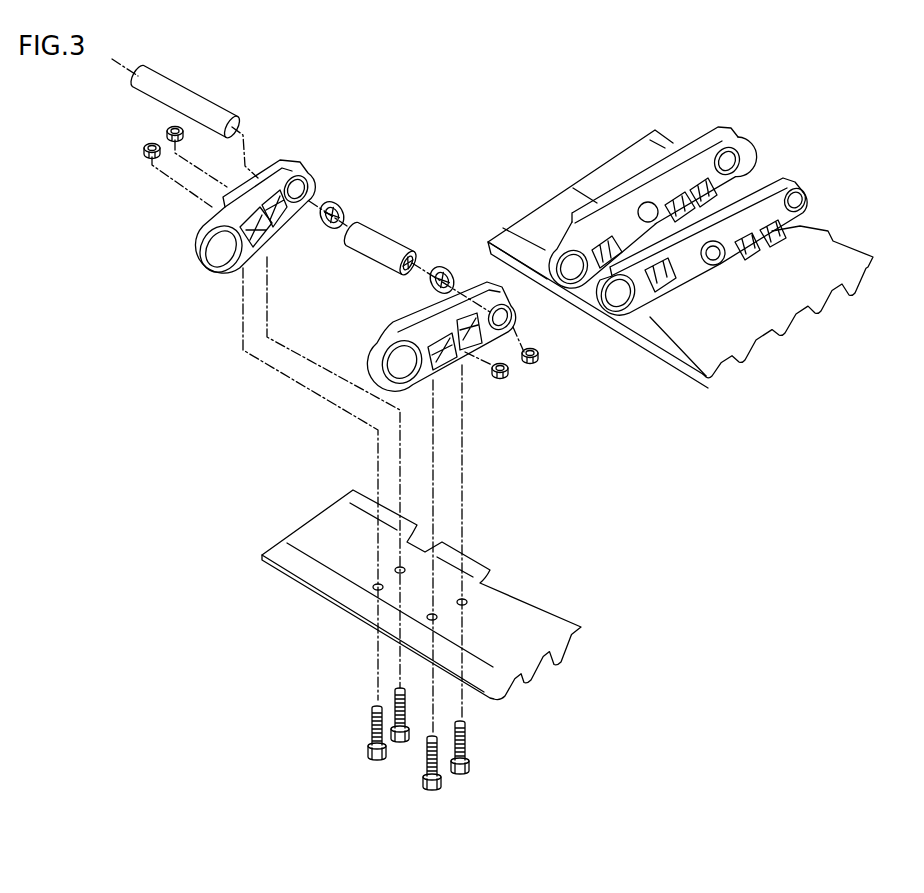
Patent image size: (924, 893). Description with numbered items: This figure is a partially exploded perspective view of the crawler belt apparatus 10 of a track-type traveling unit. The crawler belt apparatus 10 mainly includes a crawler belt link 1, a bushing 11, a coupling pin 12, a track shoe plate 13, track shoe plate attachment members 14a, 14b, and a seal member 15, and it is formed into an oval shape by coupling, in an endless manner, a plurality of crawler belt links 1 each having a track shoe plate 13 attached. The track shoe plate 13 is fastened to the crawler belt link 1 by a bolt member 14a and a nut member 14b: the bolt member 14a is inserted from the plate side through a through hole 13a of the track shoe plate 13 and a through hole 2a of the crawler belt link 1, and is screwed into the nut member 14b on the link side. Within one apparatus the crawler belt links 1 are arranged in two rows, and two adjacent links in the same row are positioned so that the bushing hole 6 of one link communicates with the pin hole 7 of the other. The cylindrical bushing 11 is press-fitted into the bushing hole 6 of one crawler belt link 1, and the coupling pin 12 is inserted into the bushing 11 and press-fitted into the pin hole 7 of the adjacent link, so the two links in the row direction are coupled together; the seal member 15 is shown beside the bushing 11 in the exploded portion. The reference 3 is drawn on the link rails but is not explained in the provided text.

The crawler belt link 1 is at (286, 152).
The through hole 2a is at (282, 233).
The link body rail 3 is at (267, 183).
The bushing hole 6 is at (220, 257).
The pin hole 7 is at (303, 197).
The crawler belt apparatus 10 is at (794, 451).
The bushing 11 is at (385, 237).
The coupling pin 12 is at (187, 103).
The track shoe plate 13 is at (548, 607).
The through hole 13a is at (465, 600).
The bolt member 14a is at (843, 292).
The nut member 14b is at (168, 126).
The seal member 15 is at (330, 200).